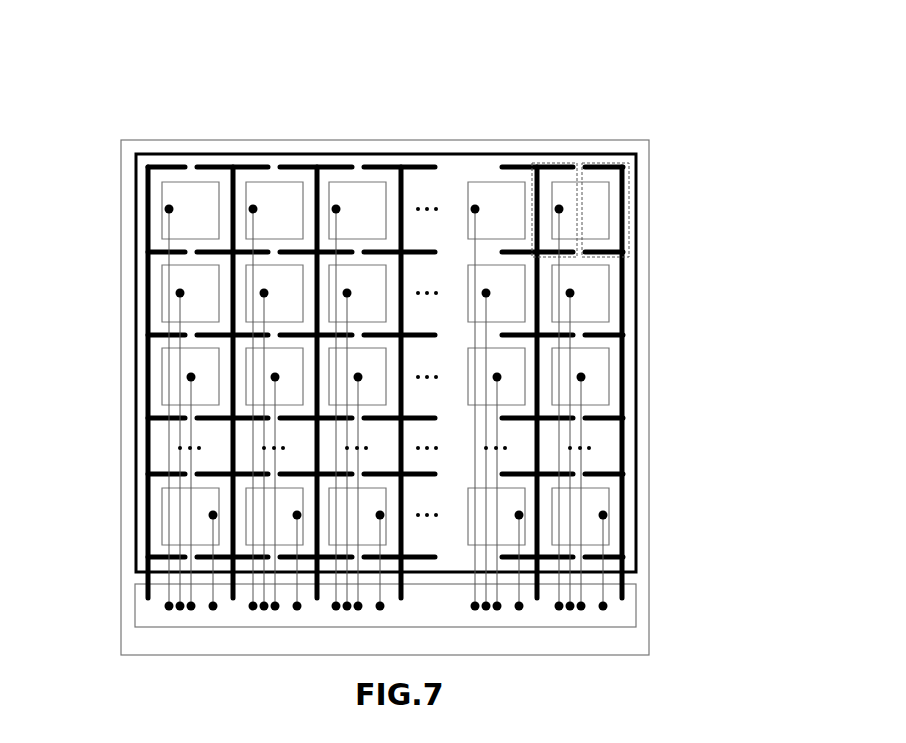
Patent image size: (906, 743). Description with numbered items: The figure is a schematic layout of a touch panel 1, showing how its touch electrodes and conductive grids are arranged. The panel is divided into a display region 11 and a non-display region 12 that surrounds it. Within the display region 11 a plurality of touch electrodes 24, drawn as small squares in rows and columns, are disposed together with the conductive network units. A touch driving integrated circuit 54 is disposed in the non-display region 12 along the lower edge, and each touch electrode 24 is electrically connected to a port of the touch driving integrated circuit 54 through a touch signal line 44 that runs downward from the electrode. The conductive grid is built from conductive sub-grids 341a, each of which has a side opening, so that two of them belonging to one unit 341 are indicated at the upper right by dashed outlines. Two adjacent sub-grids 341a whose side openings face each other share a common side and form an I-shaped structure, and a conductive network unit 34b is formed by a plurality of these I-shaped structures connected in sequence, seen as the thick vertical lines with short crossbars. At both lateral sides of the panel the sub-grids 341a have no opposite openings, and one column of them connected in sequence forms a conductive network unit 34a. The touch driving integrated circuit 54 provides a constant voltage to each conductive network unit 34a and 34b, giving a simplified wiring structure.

The display device 1 is at (653, 380).
The display region 11 is at (637, 477).
The non-display region 12 is at (642, 635).
The touch electrode 24 is at (357, 182).
The conductive network unit 34a is at (182, 165).
The conductive network unit 34b is at (245, 168).
The electrode unit 341 is at (612, 133).
The conductive sub-grid 341a is at (552, 165).
The touch signal line 44 is at (167, 445).
The touch driving integrated circuit 54 is at (135, 622).